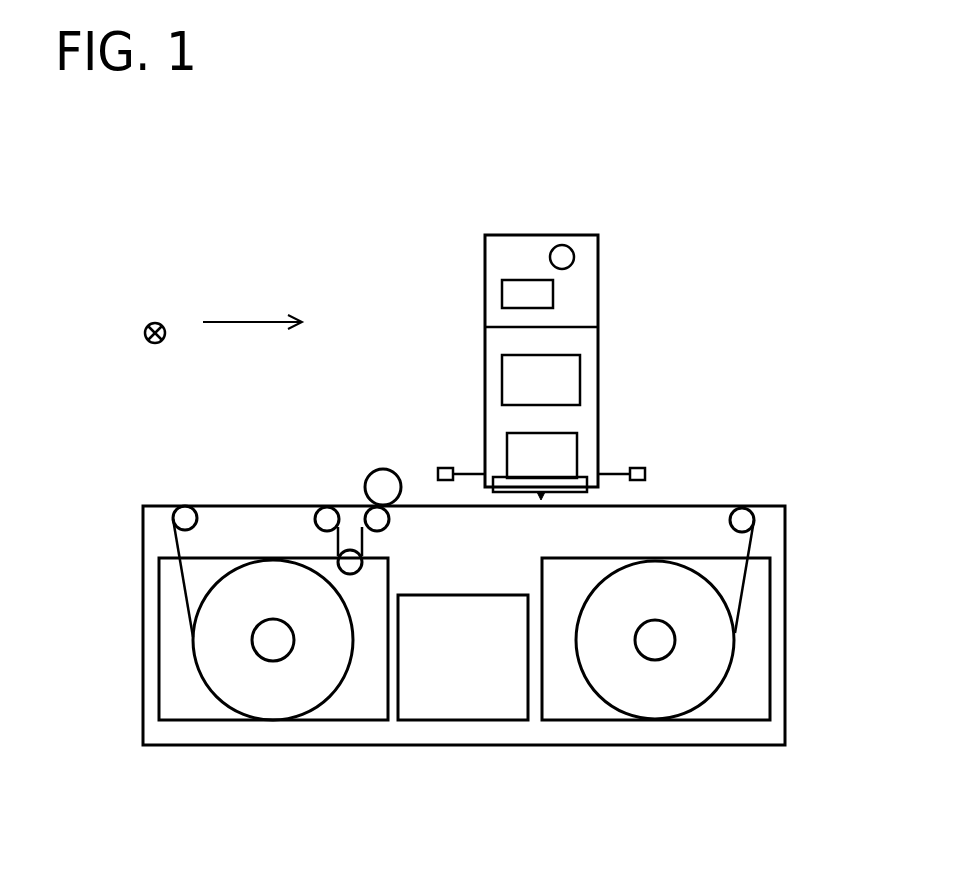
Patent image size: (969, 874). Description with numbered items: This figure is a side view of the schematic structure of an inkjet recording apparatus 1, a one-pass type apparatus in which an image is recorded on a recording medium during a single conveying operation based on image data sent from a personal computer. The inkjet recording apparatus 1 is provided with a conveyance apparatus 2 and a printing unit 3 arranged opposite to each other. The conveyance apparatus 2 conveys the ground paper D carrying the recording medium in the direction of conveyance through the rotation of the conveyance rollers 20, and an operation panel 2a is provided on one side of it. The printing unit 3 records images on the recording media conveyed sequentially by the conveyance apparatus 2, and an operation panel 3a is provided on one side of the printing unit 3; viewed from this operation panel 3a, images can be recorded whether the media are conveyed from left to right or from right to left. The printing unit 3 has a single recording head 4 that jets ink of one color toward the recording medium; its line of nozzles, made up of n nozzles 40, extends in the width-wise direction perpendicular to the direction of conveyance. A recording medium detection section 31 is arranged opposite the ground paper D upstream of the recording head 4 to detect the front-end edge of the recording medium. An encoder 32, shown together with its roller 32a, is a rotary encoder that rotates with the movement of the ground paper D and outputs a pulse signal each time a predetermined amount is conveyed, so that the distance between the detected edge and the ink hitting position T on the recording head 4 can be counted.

The inkjet recording apparatus 1 is at (176, 189).
The conveyance apparatus 2 is at (840, 503).
The operation panel 2a is at (477, 705).
The printing unit 3 is at (665, 292).
The operation panel 3a is at (583, 344).
The recording head 4 is at (578, 440).
The conveyance rollers 20 is at (185, 507).
The recording medium detection section 31 is at (445, 467).
The encoder 32 is at (381, 435).
The roller 32a is at (383, 468).
The nozzles 40 is at (600, 498).
The ink hitting position T is at (525, 508).
The ground paper D is at (260, 503).